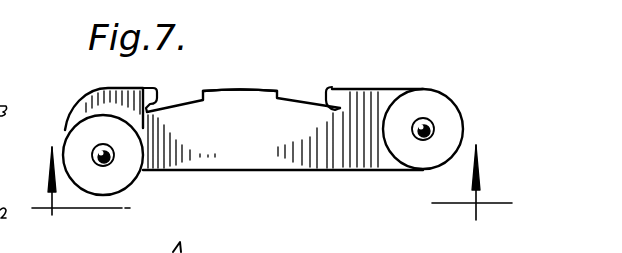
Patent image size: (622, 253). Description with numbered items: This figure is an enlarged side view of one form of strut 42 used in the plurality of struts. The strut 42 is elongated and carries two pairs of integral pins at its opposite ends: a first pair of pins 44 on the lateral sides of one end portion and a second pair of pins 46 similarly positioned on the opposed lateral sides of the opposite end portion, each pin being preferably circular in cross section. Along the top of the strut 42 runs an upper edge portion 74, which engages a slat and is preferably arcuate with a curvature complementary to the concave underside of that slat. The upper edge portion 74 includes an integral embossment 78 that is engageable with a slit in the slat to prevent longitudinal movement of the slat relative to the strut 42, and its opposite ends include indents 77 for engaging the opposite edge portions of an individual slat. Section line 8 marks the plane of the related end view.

The strut 42 is at (258, 150).
The first pair of pins 44 is at (100, 152).
The second pair of pins 46 is at (424, 127).
The upper edge portion 74 is at (290, 98).
The indents 77 is at (148, 112).
The embossment 78 is at (263, 68).
The section line 8- 8 is at (272, 196).